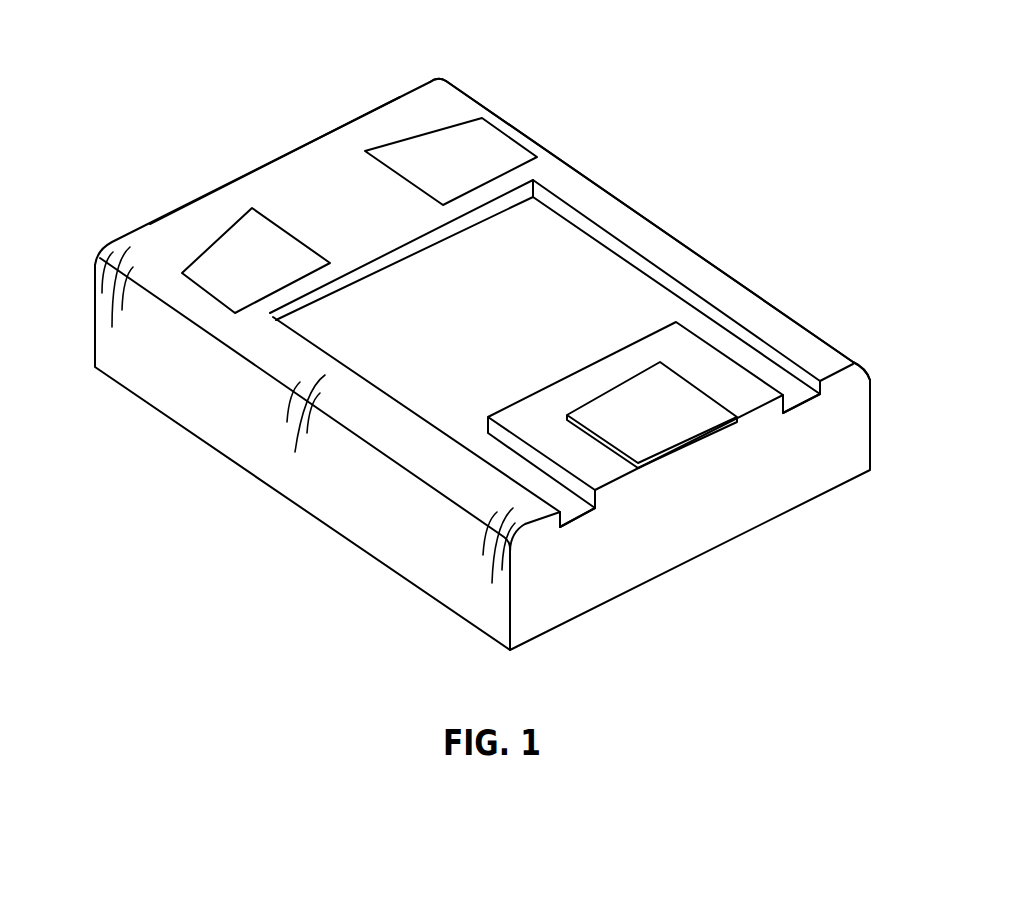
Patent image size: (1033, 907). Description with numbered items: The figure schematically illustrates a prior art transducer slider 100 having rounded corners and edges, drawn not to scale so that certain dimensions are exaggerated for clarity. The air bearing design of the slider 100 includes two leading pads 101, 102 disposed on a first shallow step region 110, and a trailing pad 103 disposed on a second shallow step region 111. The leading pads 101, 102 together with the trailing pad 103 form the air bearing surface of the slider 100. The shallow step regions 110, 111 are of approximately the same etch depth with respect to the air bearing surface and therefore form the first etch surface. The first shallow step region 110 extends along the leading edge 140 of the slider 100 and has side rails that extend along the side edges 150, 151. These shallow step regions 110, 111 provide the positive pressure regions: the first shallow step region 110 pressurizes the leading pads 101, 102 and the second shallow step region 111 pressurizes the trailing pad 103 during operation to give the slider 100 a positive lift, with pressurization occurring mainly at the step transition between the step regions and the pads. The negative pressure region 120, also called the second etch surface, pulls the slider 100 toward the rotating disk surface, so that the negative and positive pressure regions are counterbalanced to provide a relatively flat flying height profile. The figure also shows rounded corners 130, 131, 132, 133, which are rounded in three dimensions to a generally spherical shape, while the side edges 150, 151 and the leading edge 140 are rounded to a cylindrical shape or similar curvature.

The slider 100 is at (712, 99).
The leading pad 101 is at (271, 275).
The leading pad 102 is at (475, 177).
The trailing pad 103 is at (666, 431).
The first shallow step region 110 is at (364, 222).
The second shallow step region 111 is at (559, 432).
The negative pressure region 120 is at (511, 329).
The rounded corner 130 is at (438, 77).
The rounded corner 131 is at (860, 362).
The rounded corner 132 is at (518, 546).
The rounded corner 133 is at (103, 258).
The leading edge 140 is at (270, 162).
The side edge 150 is at (647, 213).
The side edge 151 is at (313, 408).